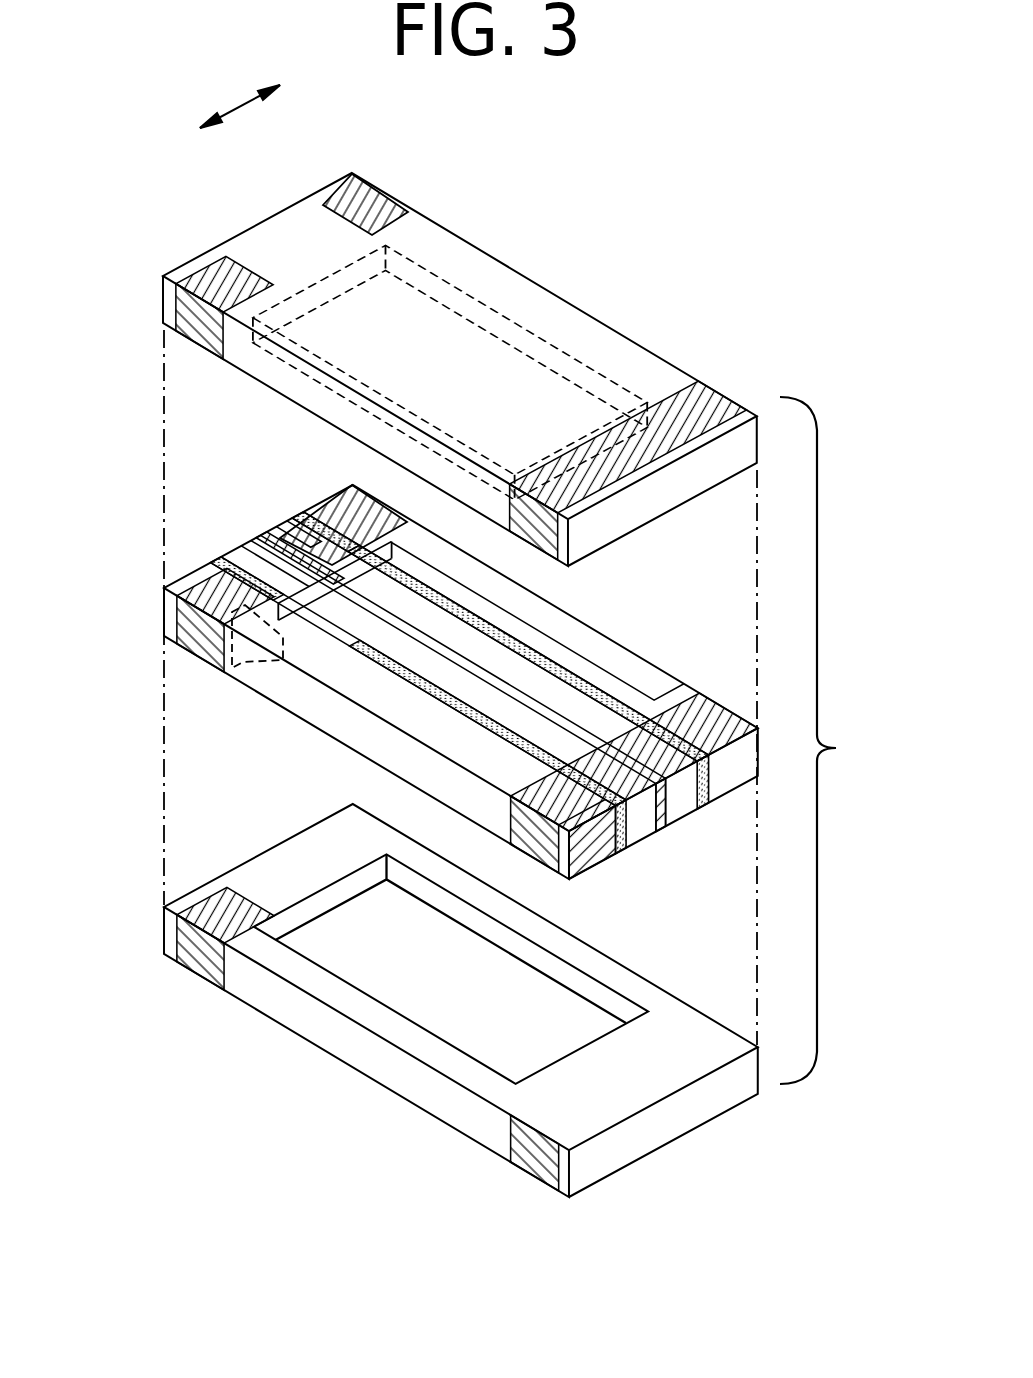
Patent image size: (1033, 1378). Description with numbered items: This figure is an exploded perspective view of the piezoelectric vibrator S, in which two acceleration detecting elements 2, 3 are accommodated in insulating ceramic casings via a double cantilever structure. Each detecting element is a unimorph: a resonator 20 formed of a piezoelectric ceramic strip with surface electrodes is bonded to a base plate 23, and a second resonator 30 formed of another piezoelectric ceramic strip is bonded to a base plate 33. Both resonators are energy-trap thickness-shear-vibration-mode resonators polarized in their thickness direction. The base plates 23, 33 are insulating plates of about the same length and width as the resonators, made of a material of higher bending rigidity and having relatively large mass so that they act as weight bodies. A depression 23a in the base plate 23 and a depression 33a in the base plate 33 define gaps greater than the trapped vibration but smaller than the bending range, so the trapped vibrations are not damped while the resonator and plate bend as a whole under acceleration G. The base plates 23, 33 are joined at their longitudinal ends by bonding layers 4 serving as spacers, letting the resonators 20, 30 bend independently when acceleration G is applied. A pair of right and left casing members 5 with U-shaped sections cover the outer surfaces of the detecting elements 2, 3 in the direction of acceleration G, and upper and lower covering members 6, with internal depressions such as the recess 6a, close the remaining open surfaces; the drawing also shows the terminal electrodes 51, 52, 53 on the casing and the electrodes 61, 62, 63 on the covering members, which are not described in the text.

The acceleration detecting element 2 is at (710, 800).
The acceleration detecting element 3 is at (657, 828).
The bonding layer 4 is at (272, 532).
The casing member 5 is at (643, 673).
The covering member 6 is at (555, 297).
The recess of lid 6a is at (465, 292).
The resonator 20 is at (295, 523).
The base plate 23 is at (288, 515).
The depression 23a is at (537, 658).
The resonator 30 is at (222, 556).
The base plate 33 is at (243, 547).
The depression 33a is at (350, 650).
The terminal electrode 51 is at (700, 705).
The terminal electrode 52 is at (338, 505).
The terminal electrode 53 is at (237, 676).
The lid electrode 61 is at (712, 413).
The lid electrode 62 is at (377, 195).
The lid electrode 63 is at (200, 285).
The piezoelectric vibrator S is at (823, 740).
The acceleration G is at (240, 95).